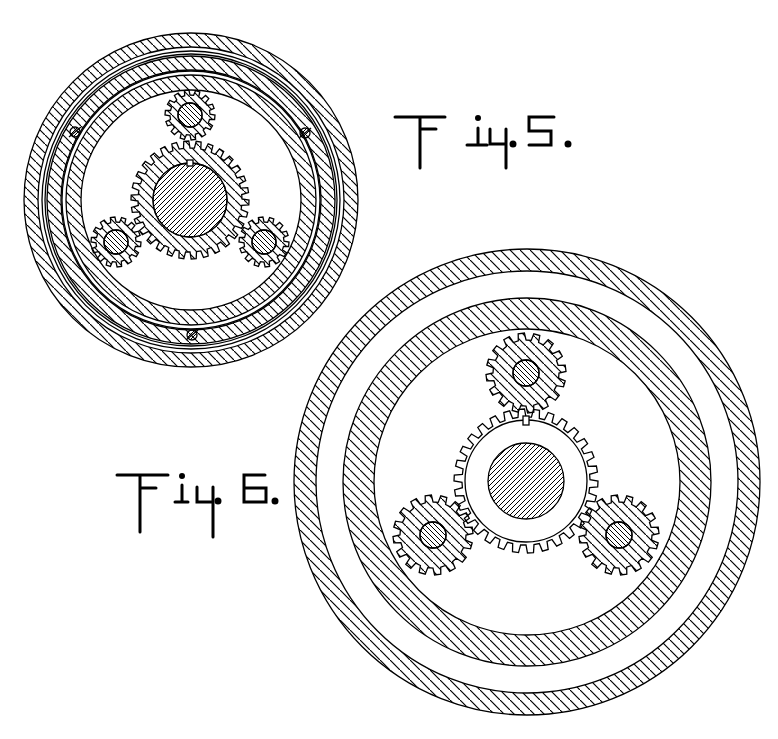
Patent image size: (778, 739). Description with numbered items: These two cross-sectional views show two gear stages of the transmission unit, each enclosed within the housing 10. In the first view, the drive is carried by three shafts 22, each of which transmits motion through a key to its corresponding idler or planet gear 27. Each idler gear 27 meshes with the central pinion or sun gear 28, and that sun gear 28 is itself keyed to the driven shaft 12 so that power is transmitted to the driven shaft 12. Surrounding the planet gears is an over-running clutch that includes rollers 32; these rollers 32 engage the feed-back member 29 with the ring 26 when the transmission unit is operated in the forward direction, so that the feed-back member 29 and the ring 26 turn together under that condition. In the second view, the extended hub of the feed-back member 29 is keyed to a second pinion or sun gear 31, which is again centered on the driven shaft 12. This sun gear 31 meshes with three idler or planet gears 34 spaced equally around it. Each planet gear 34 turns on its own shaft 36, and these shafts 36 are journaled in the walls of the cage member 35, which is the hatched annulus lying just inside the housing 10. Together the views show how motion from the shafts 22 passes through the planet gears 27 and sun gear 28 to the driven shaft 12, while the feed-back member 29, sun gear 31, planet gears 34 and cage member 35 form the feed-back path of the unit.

In FIG. 5, the outer housing ring 10 is at (196, 33).
In FIG. 6, the outer housing ring 10 is at (530, 252).
In FIG. 5, the driven shaft 12 is at (197, 171).
In FIG. 6, the driven shaft 12 is at (553, 456).
In FIG. 5, the shaft 22 is at (167, 118).
In FIG. 5, the ring 26 is at (238, 87).
In FIG. 5, the idler or planet gear 27 is at (170, 100).
In FIG. 5, the pinion or sun gear 28 is at (171, 255).
In FIG. 5, the feed-back member 29 is at (117, 68).
In FIG. 6, the feed-back member 29 is at (575, 472).
In FIG. 6, the pinion or sun gear 31 is at (476, 433).
In FIG. 5, the rollers 32 is at (72, 128).
In FIG. 6, the idler or planet gear 34 is at (487, 375).
In FIG. 6, the cage member 35 is at (458, 312).
In FIG. 6, the shaft 36 is at (539, 375).